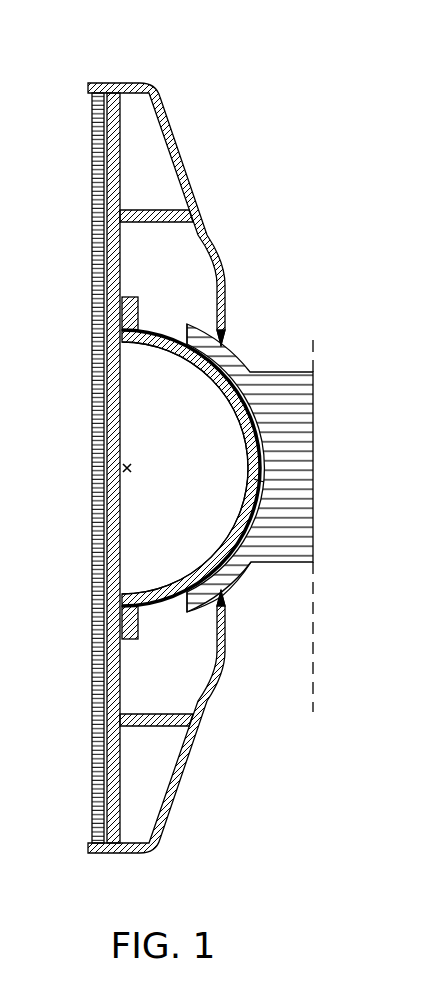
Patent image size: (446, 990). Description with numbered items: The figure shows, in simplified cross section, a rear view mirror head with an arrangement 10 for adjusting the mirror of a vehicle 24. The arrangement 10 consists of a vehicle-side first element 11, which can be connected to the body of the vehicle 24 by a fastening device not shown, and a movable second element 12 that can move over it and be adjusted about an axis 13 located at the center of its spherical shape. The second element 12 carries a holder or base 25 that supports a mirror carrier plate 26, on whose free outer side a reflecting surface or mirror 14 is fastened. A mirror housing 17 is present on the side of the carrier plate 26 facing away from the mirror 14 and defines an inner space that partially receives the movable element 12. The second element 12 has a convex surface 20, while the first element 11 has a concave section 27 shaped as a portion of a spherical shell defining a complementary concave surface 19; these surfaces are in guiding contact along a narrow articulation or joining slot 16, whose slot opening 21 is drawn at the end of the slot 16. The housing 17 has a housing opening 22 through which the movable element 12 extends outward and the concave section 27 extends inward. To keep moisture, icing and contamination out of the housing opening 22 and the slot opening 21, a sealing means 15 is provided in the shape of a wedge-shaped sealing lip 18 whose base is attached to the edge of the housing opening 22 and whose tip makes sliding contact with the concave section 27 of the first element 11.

The arrangement for adjusting rear view mirrors 10 is at (324, 150).
The vehicle-side first element 11 is at (321, 446).
The movable second element 12 is at (205, 380).
The axis 13 is at (128, 474).
The mirror 14 is at (92, 628).
The sealing means 15 is at (251, 613).
The slot 16 is at (263, 477).
The mirror housing 17 is at (130, 83).
The sealing lip 18 is at (211, 600).
The concave surface 19 is at (212, 577).
The convex surface 20 is at (183, 333).
The slot opening 21 is at (182, 600).
The housing opening 22 is at (243, 350).
The vehicle 24 is at (345, 625).
The base 25 is at (133, 640).
The mirror carrier plate 26 is at (121, 760).
The concave section 27 is at (246, 583).